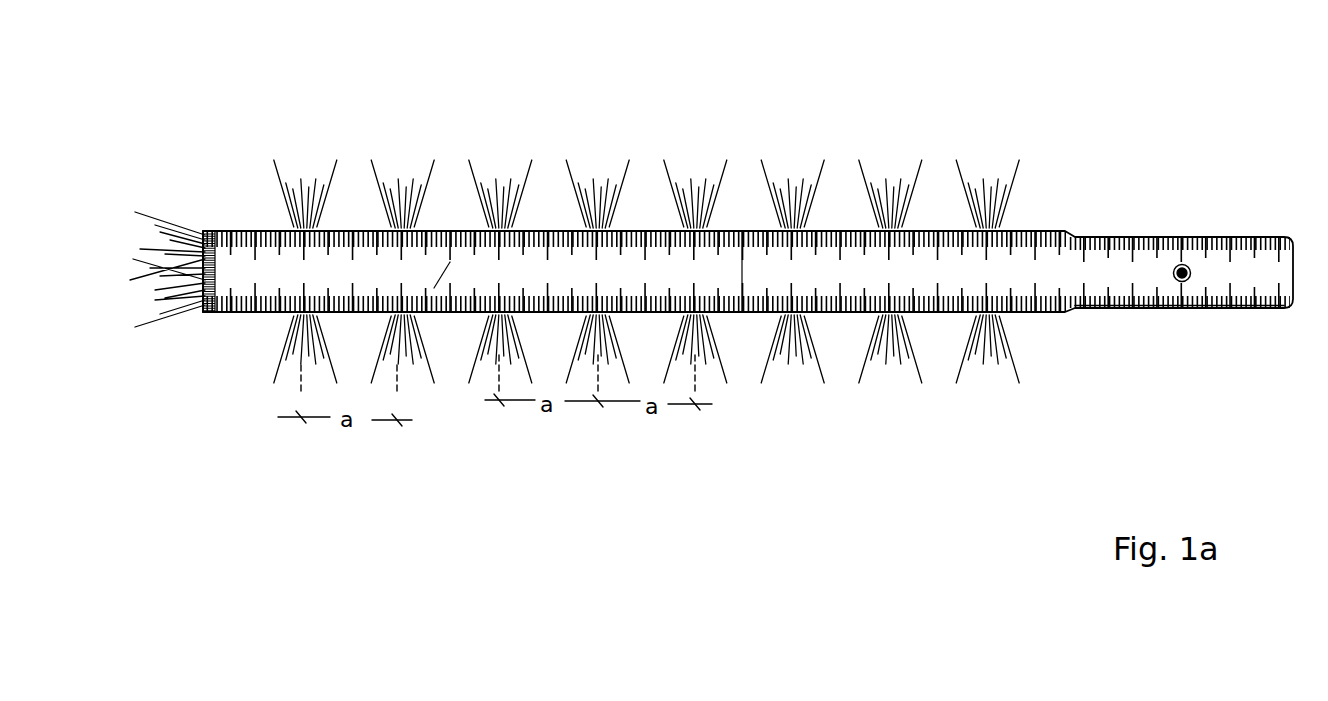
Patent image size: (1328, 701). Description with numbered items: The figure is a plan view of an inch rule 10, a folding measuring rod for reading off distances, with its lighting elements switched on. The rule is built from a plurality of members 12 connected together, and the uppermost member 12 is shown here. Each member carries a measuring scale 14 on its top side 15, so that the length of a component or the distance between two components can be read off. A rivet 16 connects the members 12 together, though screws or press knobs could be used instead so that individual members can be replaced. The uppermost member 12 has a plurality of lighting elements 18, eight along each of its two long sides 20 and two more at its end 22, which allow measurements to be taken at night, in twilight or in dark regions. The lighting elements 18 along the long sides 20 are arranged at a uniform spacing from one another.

The inch rule 10 is at (266, 63).
The member 12 is at (1067, 297).
The measuring scale 14 is at (1091, 264).
The top side 15 is at (438, 288).
The rivet 16 is at (1188, 264).
The lighting element 18 is at (700, 228).
The long side 20 is at (742, 229).
The end 22 is at (199, 231).